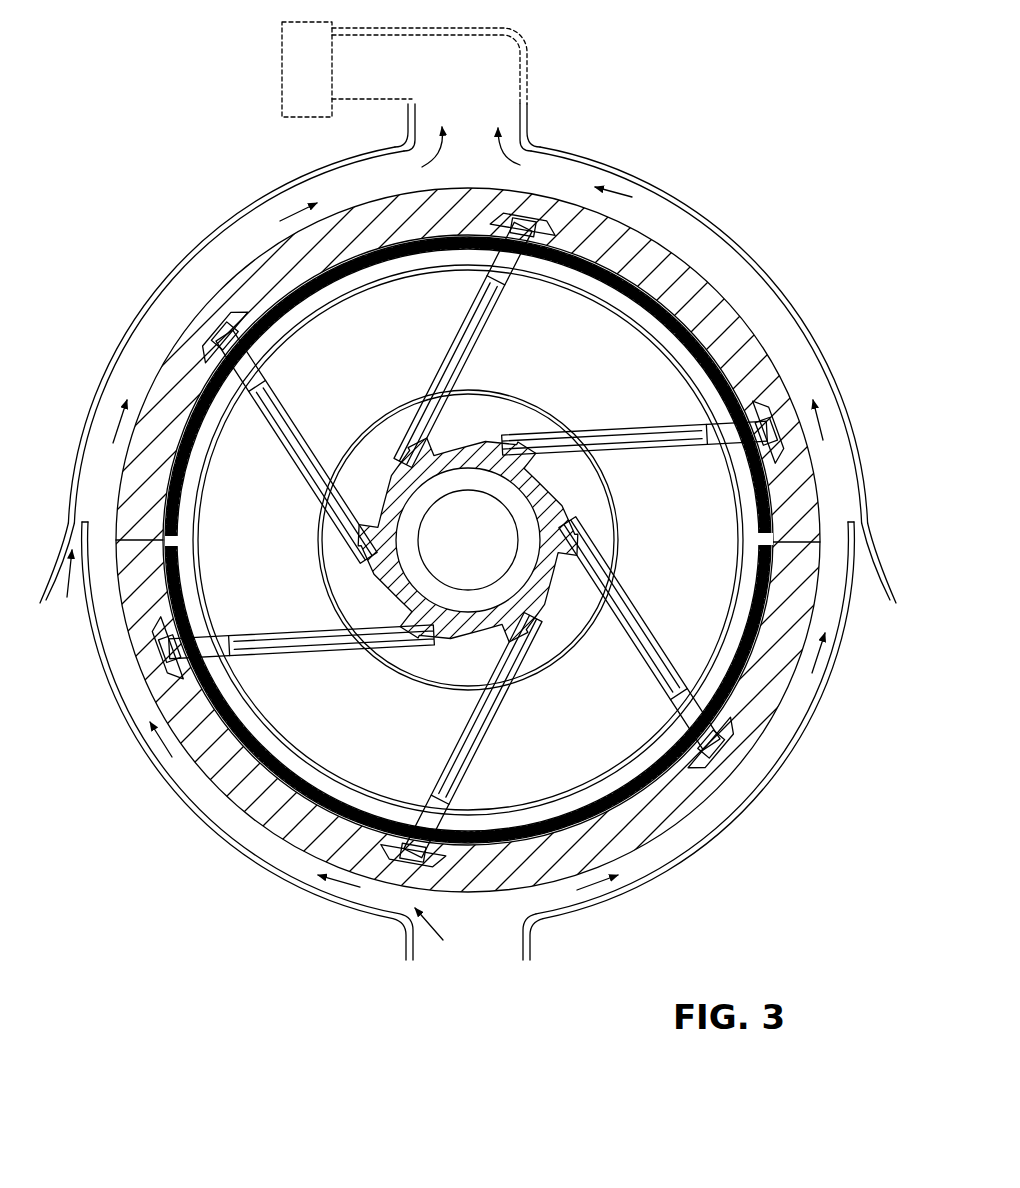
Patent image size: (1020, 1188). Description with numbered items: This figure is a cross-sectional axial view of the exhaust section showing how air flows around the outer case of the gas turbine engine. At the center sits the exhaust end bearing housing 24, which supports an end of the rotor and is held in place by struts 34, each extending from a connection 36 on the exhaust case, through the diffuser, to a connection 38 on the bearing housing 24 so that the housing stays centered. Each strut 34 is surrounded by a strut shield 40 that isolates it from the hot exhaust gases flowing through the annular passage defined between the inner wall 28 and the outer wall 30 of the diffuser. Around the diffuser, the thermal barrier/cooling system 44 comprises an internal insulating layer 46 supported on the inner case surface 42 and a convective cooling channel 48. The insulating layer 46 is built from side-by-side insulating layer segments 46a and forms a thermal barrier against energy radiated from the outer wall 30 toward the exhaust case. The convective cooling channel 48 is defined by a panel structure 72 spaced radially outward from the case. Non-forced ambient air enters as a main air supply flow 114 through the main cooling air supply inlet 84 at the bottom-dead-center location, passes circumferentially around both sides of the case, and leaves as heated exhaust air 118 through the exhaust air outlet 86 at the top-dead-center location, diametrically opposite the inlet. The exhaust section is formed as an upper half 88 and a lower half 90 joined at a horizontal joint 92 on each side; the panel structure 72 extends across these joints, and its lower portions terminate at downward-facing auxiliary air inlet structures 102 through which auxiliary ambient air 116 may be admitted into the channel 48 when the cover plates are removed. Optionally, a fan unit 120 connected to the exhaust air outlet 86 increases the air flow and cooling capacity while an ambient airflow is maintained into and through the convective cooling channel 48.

The exhaust end bearing housing 24 is at (505, 428).
The inner wall 28 is at (322, 540).
The outer wall 30 is at (200, 566).
The strut 34 is at (395, 540).
The connection 36 is at (240, 331).
The connection 38 is at (377, 530).
The strut shield 40 is at (303, 432).
The inner case surface 42 is at (680, 290).
The thermal barrier/cooling system 44 is at (187, 249).
The internal insulating layer 46 is at (640, 283).
The insulating layer segments 46a is at (367, 271).
The convective cooling channel 48 is at (556, 170).
The panel structure 72 is at (768, 790).
The main cooling air supply inlet 84 is at (512, 956).
The exhaust air outlet 86 is at (497, 103).
The upper half 88 is at (786, 381).
The lower half 90 is at (800, 690).
The horizontal joint 92 is at (143, 540).
The auxiliary air inlet structure 102 is at (870, 583).
The main air supply flow 114 is at (524, 908).
The auxiliary ambient air 116 is at (77, 610).
The heated exhaust air 118 is at (407, 140).
The fan unit 120 is at (303, 80).